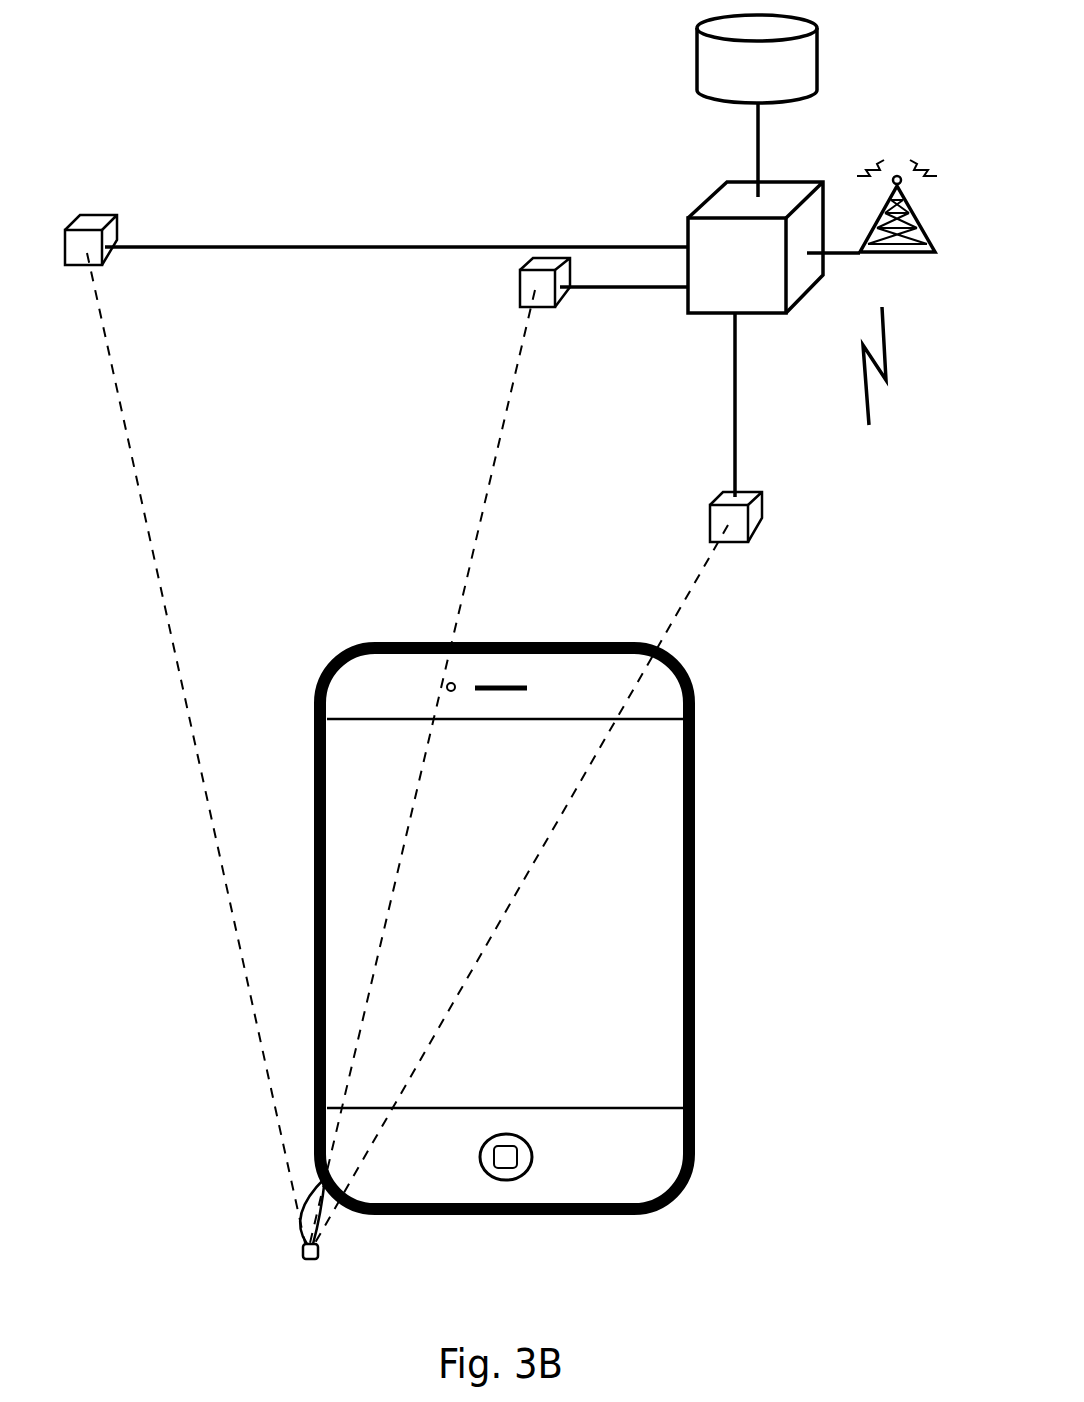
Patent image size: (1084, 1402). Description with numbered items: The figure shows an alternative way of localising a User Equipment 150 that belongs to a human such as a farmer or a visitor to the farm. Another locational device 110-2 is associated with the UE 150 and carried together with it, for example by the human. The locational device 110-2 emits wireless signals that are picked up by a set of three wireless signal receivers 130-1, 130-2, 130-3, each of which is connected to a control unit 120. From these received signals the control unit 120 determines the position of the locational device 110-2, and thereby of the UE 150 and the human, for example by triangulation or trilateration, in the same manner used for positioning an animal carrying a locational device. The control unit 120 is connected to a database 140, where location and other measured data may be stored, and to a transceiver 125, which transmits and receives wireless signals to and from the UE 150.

The database 140 is at (697, 57).
The control unit 120 is at (760, 274).
The transceiver 125 is at (897, 175).
The wireless signal receiver 130-1 is at (542, 265).
The wireless signal receiver 130-2 is at (90, 220).
The wireless signal receiver 130-3 is at (748, 492).
The user equipment 150 is at (695, 845).
The locational device 110-2 is at (302, 1250).